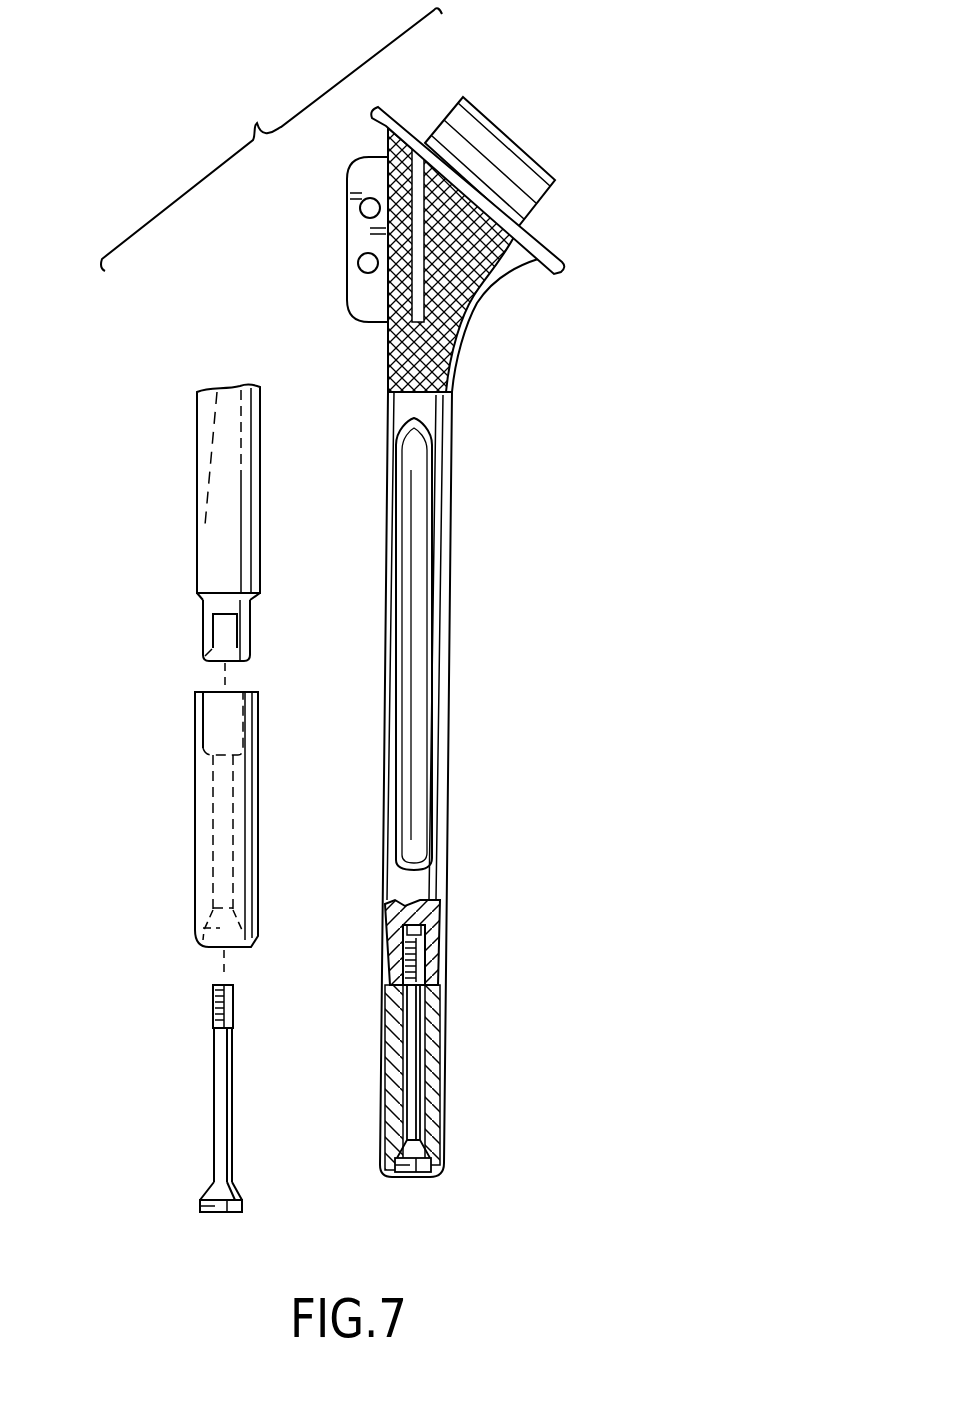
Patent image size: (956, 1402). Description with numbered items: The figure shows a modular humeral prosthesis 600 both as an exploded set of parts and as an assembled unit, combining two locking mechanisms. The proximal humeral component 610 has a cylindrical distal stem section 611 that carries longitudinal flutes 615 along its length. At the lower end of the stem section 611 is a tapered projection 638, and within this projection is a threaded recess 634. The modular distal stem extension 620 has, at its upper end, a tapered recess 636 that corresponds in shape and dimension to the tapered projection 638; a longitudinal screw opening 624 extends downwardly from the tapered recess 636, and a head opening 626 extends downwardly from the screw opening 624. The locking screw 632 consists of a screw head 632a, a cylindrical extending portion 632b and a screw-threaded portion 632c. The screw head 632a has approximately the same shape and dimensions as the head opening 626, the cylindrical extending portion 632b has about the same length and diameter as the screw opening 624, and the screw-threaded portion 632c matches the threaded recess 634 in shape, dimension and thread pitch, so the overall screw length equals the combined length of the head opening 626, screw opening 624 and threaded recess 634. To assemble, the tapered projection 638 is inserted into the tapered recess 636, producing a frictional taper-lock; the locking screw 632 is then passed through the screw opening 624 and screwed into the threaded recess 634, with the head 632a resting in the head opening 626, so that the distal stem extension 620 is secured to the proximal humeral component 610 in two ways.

The modular humeral prosthesis 600 is at (508, 560).
The proximal humeral component 610 is at (456, 423).
The cylindrical distal stem section 611 is at (197, 483).
The longitudinal flutes 615 is at (225, 420).
The modular distal stem extension 620 is at (197, 822).
The longitudinal screw opening 624 is at (205, 882).
The head opening 626 is at (200, 950).
The locking screw 632 is at (213, 1073).
The screw head 632a is at (210, 1203).
The cylindrical extending portion 632b is at (215, 1143).
The screw-threaded portion 632c is at (213, 995).
The threaded recess 634 is at (210, 660).
The tapered recess 636 is at (215, 723).
The tapered projection 638 is at (205, 632).